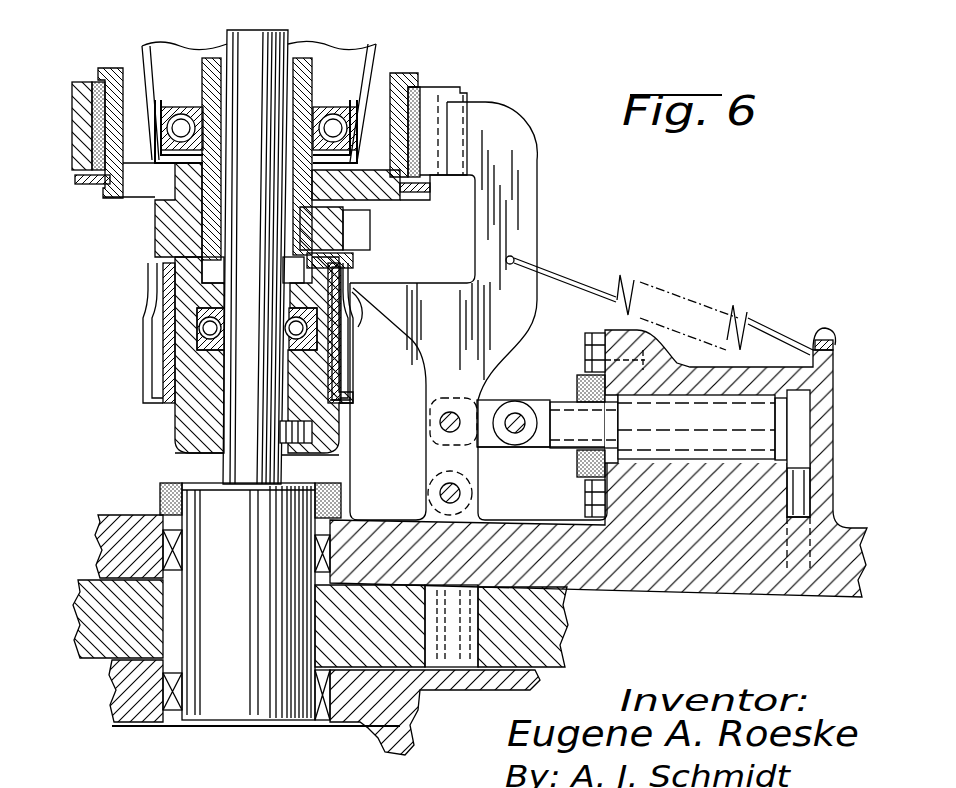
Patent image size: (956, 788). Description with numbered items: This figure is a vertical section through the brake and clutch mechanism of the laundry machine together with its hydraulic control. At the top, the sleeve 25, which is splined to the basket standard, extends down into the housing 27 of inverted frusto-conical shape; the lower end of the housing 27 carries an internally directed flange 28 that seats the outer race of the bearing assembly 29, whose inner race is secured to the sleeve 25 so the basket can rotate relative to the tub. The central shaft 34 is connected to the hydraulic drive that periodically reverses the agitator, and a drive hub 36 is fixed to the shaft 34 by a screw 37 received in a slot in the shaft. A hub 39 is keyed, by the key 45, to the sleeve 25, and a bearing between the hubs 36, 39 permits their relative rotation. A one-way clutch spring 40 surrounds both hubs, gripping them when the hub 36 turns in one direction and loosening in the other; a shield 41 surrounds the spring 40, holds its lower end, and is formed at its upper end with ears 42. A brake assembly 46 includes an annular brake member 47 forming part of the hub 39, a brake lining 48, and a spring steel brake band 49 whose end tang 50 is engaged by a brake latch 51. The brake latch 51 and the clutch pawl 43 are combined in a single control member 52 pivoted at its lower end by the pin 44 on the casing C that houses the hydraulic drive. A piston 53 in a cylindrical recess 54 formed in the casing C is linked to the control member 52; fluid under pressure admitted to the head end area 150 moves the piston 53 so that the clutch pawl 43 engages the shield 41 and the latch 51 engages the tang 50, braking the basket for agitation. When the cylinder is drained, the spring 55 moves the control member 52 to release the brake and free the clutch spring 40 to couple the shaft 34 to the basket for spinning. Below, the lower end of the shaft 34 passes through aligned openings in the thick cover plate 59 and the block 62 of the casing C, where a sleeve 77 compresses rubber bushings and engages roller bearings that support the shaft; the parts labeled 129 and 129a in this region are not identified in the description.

The sleeve 25 is at (317, 90).
The housing 27 is at (378, 45).
The internally directed flange 28 is at (177, 160).
The bearing assembly 29 is at (173, 100).
The shaft 34 is at (245, 32).
The drive hub 36 is at (177, 442).
The screw 37 is at (323, 437).
The hub 39 is at (160, 220).
The one-way clutch spring 40 is at (160, 287).
The shield 41 is at (153, 353).
The ears 42 is at (342, 270).
The clutch pawl 43 is at (390, 318).
The pin 44 is at (463, 497).
The key 45 is at (307, 195).
The brake assembly 46 is at (442, 84).
The annular brake member 47 is at (113, 68).
The brake lining 48 is at (413, 192).
The brake band 49 is at (70, 177).
The end tang 50 is at (468, 92).
The brake latch 51 is at (513, 123).
The control member 52 is at (537, 227).
The piston 53 is at (713, 425).
The cylindrical recess 54 is at (755, 398).
The spring 55 is at (692, 295).
The cover plate 59 is at (107, 560).
The block 62 is at (360, 730).
The sleeve 77 is at (295, 482).
The plate 129 is at (87, 660).
The plate portion 129a is at (562, 630).
The head end area 150 is at (800, 422).
The casing C is at (114, 503).